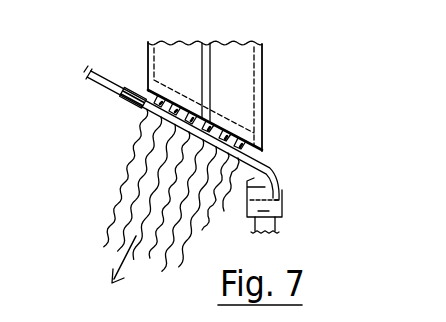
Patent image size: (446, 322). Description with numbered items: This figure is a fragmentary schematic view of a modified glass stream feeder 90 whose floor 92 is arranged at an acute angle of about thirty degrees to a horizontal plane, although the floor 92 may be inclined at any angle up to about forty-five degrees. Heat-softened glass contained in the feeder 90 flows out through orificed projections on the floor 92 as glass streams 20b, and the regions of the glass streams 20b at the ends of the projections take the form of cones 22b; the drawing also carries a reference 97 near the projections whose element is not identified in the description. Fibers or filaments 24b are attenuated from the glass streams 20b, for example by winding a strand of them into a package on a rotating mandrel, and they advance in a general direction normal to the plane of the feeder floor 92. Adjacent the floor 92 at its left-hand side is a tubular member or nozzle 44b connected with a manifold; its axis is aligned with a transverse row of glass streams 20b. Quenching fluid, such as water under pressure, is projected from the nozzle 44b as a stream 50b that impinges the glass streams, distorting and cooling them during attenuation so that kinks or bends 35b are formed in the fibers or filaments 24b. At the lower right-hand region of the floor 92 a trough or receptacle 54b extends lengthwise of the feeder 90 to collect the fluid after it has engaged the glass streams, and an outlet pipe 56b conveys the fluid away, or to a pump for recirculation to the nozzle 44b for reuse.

The glass streams 20b is at (246, 145).
The cones 22b is at (218, 120).
The glass stream feeder 90 is at (148, 88).
The hook clips 97 is at (160, 97).
The floor 92 is at (141, 86).
The tubular nozzle 44b is at (88, 76).
The stream 50b is at (148, 112).
The fibers or filaments 24b is at (123, 197).
The kinks or bends 35b is at (208, 205).
The trough 54b is at (285, 195).
The outlet pipe 56b is at (276, 227).